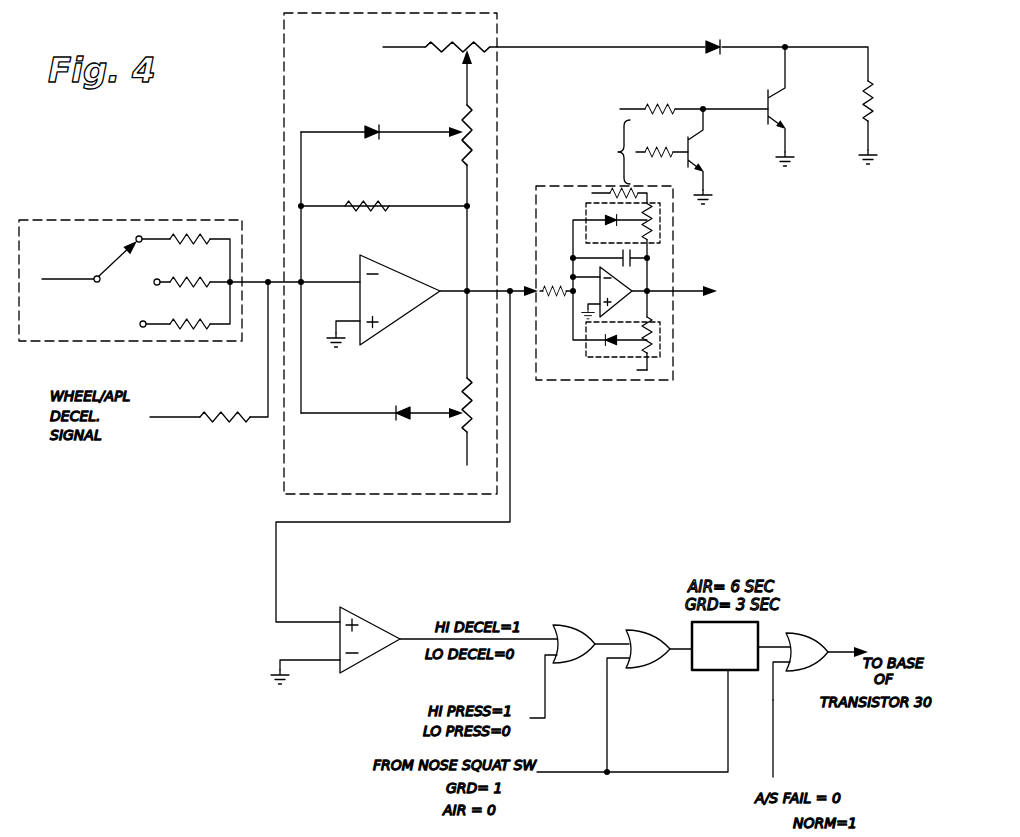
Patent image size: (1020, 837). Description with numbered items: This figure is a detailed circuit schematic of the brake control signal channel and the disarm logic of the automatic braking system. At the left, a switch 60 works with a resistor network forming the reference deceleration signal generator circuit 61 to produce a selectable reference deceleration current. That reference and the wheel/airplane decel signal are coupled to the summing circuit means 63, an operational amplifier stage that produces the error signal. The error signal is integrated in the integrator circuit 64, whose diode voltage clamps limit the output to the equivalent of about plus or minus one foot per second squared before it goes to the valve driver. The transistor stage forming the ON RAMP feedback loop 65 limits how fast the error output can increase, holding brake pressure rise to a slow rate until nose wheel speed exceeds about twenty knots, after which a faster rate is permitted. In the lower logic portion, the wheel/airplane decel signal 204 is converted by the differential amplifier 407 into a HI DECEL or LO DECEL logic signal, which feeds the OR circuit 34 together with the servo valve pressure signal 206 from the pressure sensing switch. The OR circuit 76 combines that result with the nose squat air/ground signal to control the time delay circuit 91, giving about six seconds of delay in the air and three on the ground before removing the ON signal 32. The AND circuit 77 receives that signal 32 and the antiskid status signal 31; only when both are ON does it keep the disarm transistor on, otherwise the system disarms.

The switch 60 is at (160, 266).
The reference deceleration signal generator circuit 61 is at (73, 220).
The summing circuit means 63 is at (284, 490).
The integrator circuit 64 is at (674, 381).
The ON RAMP feedback loop 65 is at (755, 88).
The wheel/airplane decel signal 204 is at (277, 571).
The differential amplifier 407 is at (372, 620).
The OR circuit 34 is at (573, 626).
The servo valve pressure signal 206 is at (545, 683).
The OR circuit 76 is at (657, 669).
The time delay circuit 91 is at (703, 670).
The AND circuit input signal 32 is at (778, 641).
The AND circuit 77 is at (800, 670).
The antiskid status input signal 31 is at (774, 753).